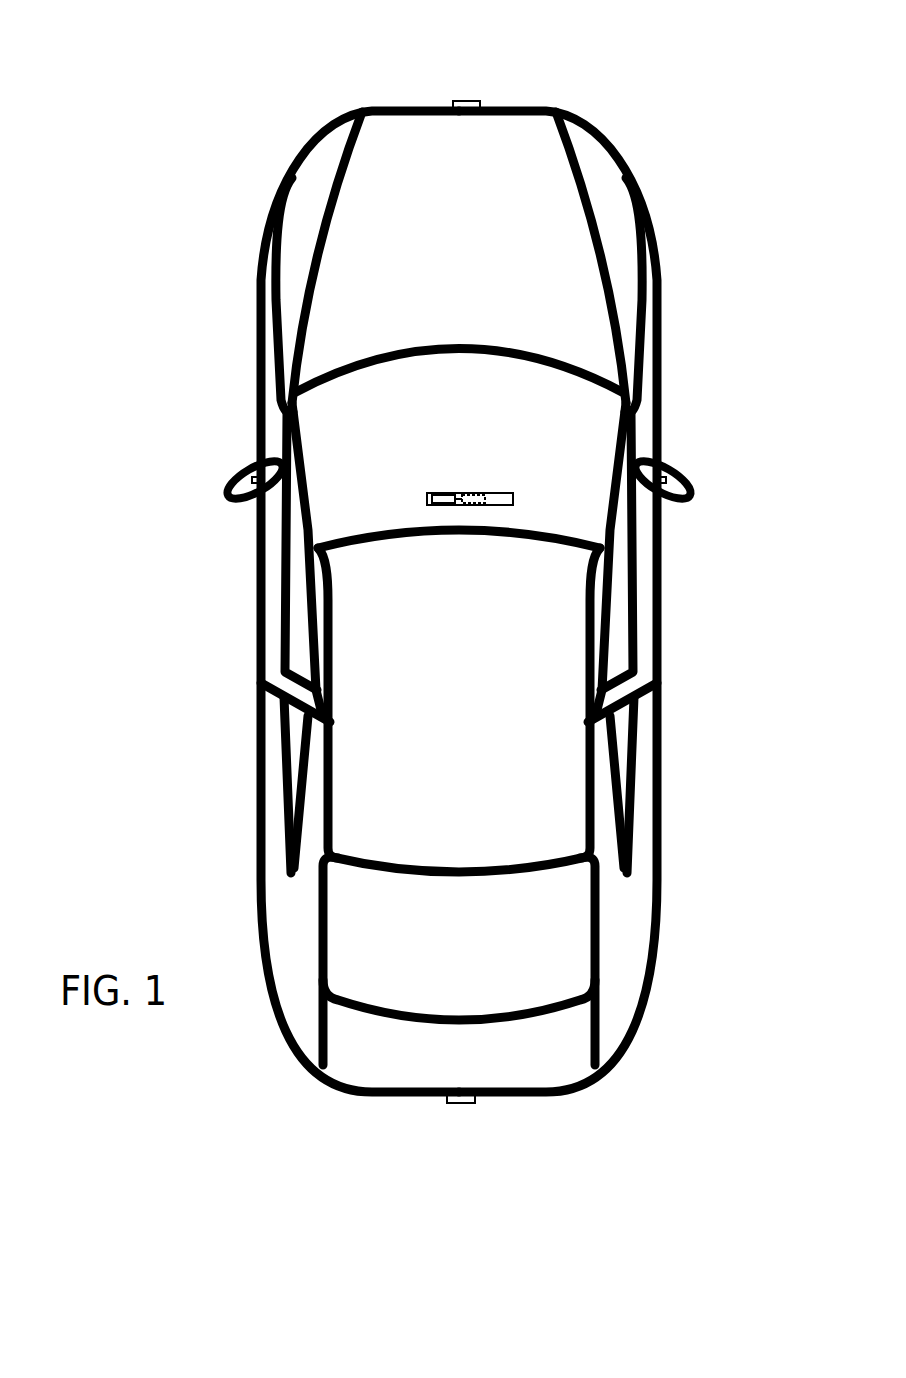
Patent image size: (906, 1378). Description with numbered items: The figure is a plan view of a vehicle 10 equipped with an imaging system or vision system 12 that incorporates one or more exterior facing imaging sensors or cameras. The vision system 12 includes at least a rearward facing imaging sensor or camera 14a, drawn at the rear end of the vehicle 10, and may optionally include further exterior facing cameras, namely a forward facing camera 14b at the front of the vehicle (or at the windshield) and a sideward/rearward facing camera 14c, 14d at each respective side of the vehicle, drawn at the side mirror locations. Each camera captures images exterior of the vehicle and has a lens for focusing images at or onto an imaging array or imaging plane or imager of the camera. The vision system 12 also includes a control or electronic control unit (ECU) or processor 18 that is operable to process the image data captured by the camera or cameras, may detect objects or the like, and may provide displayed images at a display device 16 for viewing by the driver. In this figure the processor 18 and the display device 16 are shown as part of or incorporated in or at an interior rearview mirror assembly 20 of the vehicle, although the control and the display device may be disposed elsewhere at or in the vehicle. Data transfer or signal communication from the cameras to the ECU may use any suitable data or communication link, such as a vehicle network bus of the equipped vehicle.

The vehicle 10 is at (205, 200).
The vision system 12 is at (400, 1131).
The rearward facing camera 14a is at (463, 1102).
The forward facing camera 14b is at (483, 99).
The sideward/rearward facing camera 14c is at (252, 476).
The sideward/rearward facing camera 14d is at (666, 476).
The display device 16 is at (447, 497).
The processor 18 is at (465, 494).
The interior rearview mirror assembly 20 is at (512, 493).